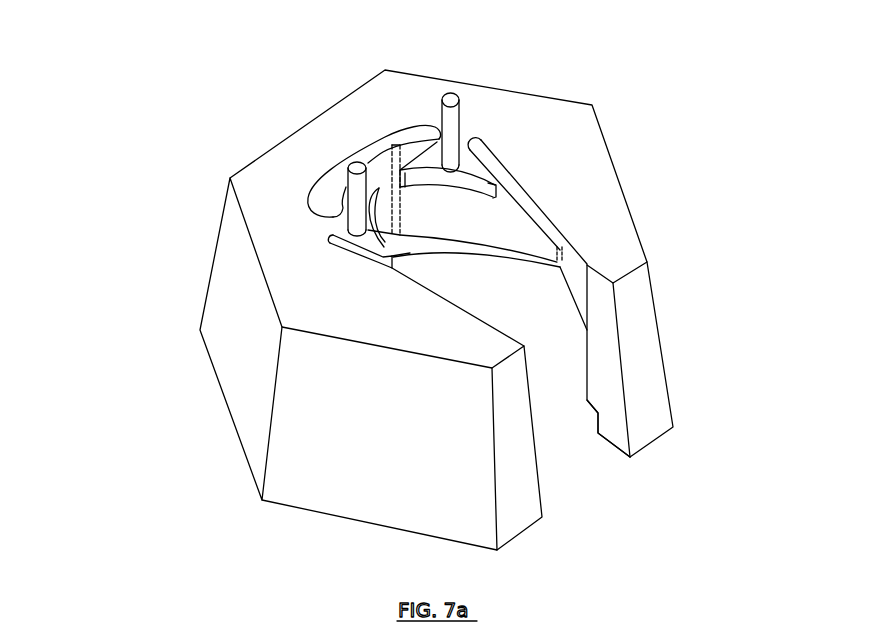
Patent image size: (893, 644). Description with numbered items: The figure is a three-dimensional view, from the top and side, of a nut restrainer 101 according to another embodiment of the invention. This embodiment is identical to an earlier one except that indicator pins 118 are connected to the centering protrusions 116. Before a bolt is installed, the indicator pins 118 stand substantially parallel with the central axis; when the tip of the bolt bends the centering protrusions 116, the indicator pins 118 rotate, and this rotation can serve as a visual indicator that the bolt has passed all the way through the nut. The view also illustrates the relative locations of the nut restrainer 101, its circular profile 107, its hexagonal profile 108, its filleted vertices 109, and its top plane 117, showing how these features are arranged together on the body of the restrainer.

The nut restrainer 101 is at (628, 184).
The circular profile 107 is at (607, 422).
The hexagonal profile 108 is at (599, 372).
The filleted vertices 109 is at (389, 183).
The centering protrusions 116 is at (336, 206).
The top plane 117 is at (458, 300).
The indicator pins 118 is at (462, 130).